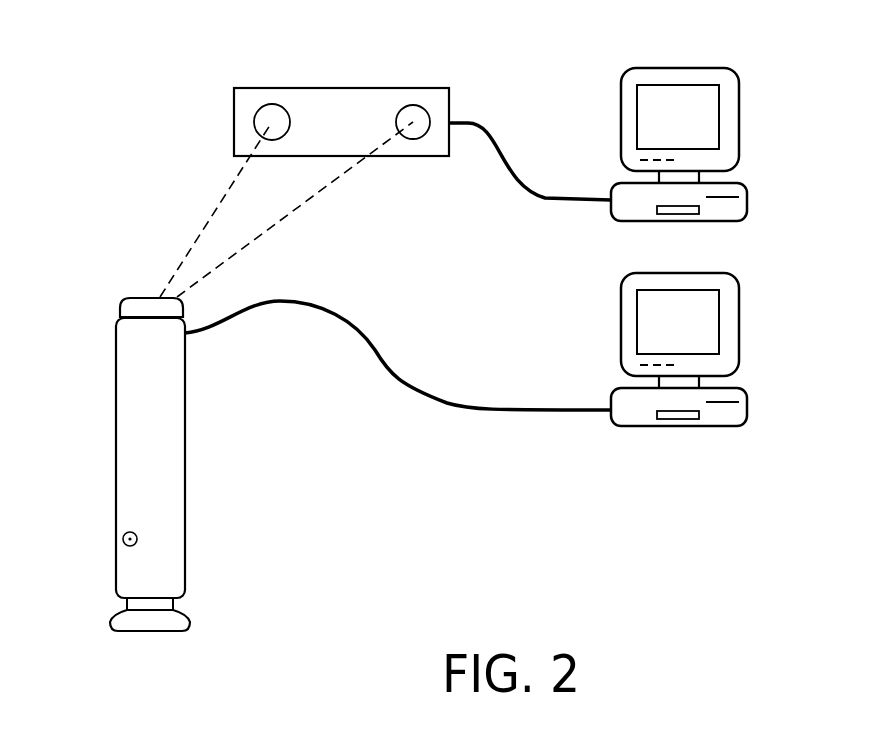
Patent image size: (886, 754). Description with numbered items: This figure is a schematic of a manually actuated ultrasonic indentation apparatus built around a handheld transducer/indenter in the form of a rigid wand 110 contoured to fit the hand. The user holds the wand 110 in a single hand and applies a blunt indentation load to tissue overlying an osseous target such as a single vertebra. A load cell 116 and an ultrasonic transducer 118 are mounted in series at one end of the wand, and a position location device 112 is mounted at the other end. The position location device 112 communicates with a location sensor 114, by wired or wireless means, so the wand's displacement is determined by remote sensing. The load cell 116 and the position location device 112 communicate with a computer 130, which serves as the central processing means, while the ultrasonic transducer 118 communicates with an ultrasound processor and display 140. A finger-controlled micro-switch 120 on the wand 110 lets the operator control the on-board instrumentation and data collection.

The transducer/indenter 110 is at (238, 540).
The position location device 112 is at (140, 305).
The location sensor 114 is at (345, 100).
The load cell 116 is at (180, 602).
The ultrasonic transducer 118 is at (190, 622).
The finger-controlled micro-switch 120 is at (123, 537).
The computer 130 is at (751, 190).
The ultrasound processor and display 140 is at (708, 432).